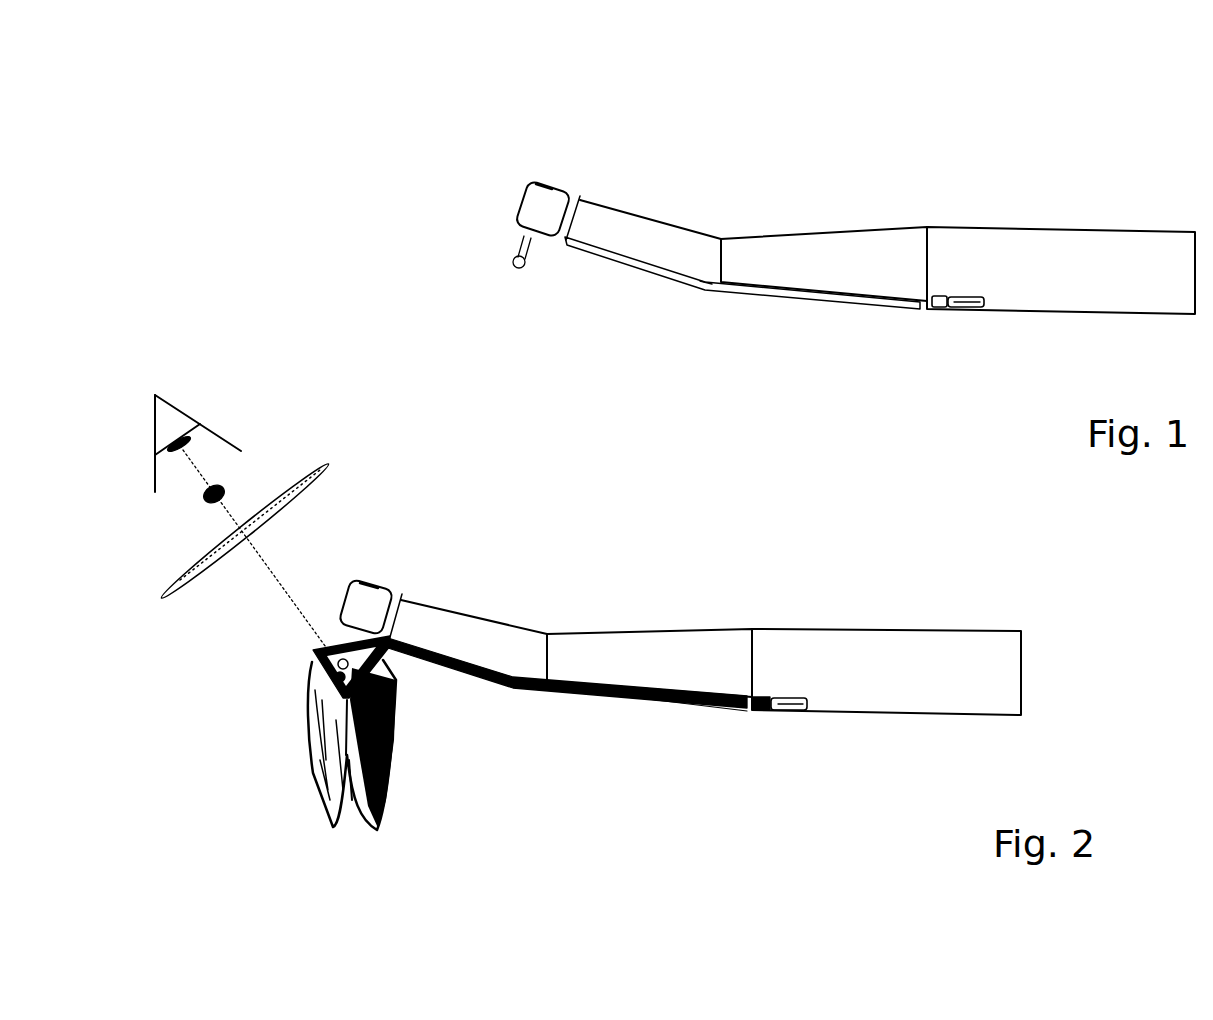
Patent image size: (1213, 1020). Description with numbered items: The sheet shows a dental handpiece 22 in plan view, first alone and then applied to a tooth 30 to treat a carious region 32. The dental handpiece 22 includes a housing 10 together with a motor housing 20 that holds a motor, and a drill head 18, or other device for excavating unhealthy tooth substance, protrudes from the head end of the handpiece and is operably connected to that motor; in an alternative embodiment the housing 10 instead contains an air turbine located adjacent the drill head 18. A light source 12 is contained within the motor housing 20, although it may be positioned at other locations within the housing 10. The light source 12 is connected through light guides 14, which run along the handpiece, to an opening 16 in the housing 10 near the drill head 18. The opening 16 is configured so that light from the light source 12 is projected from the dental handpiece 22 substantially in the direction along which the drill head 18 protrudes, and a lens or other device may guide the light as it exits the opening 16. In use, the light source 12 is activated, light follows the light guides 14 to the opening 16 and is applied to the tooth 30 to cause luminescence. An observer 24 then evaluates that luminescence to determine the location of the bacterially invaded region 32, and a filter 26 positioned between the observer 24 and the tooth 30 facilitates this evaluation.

In FIG. 1, the housing 10 is at (870, 236).
In FIG. 2, the housing 10 is at (687, 643).
In FIG. 1, the light source 12 is at (940, 308).
In FIG. 2, the light source 12 is at (766, 712).
In FIG. 1, the light guides 14 is at (681, 270).
In FIG. 2, the light guides 14 is at (517, 690).
In FIG. 1, the opening 16 is at (575, 203).
In FIG. 2, the opening 16 is at (407, 603).
In FIG. 1, the drill head 18 is at (495, 263).
In FIG. 2, the drill head 18 is at (333, 640).
In FIG. 1, the motor housing 20 is at (1063, 231).
In FIG. 2, the motor housing 20 is at (898, 638).
In FIG. 1, the dental handpiece 22 is at (963, 110).
In FIG. 2, the dental handpiece 22 is at (838, 560).
In FIG. 2, the observer 24 is at (200, 425).
In FIG. 2, the filter 26 is at (202, 578).
In FIG. 2, the tooth 30 is at (398, 700).
In FIG. 2, the carious region 32 is at (209, 502).